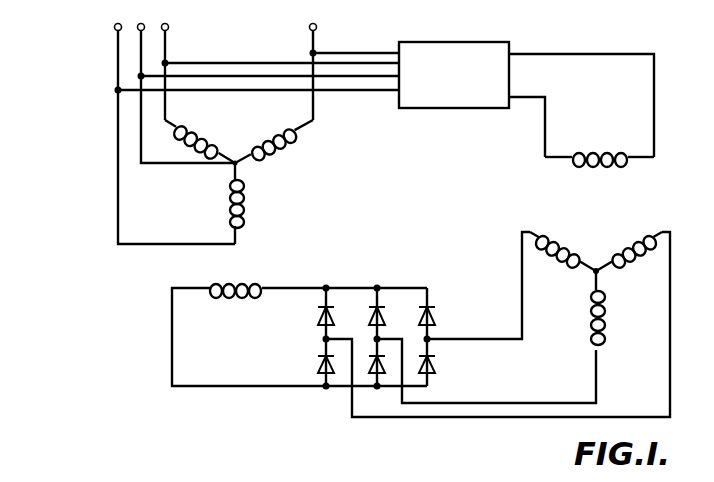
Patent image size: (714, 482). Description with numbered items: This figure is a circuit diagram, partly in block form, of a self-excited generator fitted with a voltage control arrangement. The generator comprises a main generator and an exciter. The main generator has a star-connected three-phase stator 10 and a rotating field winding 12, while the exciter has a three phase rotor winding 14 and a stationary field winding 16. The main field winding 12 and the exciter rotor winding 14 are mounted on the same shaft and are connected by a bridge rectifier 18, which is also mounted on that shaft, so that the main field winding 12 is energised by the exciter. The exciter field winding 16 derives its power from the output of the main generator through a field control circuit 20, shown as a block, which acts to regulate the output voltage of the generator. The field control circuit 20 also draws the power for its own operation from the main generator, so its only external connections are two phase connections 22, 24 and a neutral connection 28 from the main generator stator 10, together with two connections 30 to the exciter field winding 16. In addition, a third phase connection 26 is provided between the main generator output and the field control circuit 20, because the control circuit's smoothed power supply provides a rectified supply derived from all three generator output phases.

The star-connected three-phase stator 10 is at (232, 138).
The rotating field winding 12 is at (203, 284).
The three phase rotor winding 14 is at (594, 248).
The stationary field winding 16 is at (625, 168).
The bridge rectifier 18 is at (368, 284).
The field control circuit 20 is at (468, 86).
The phase connection 22 is at (345, 53).
The phase connection 24 is at (268, 63).
The third phase connection 26 is at (333, 91).
The neutral connection 28 is at (212, 76).
The connections to the exciter field 30 is at (582, 54).